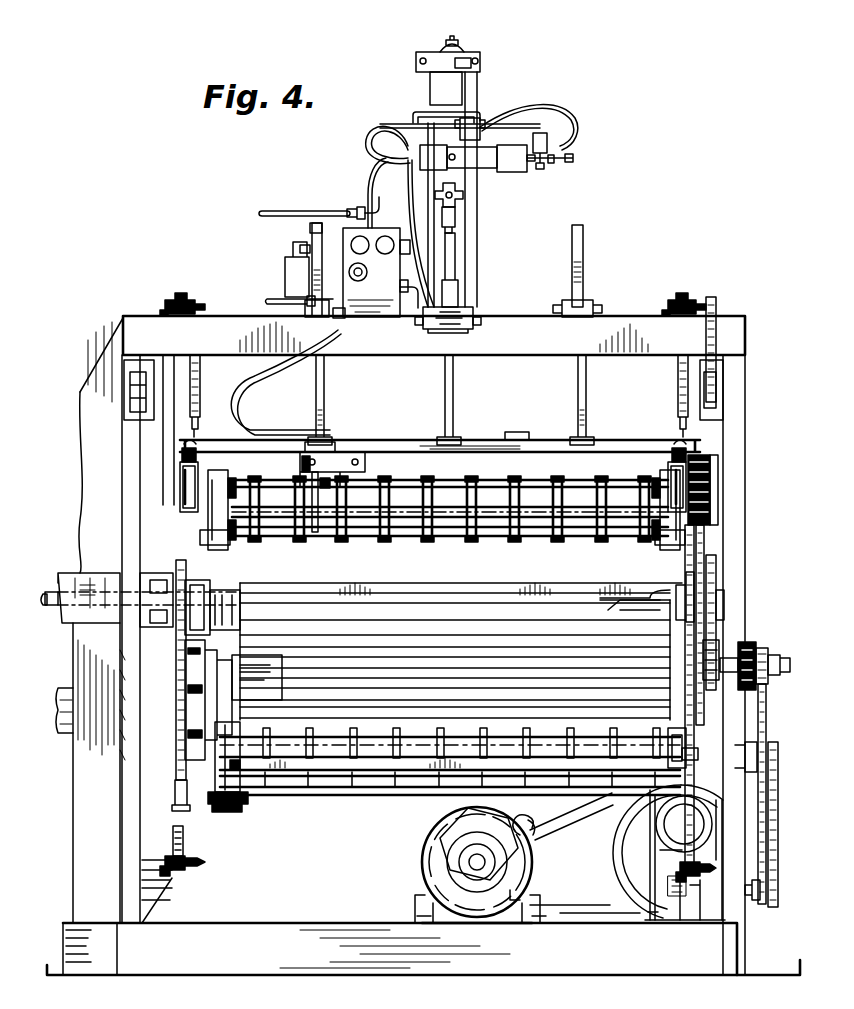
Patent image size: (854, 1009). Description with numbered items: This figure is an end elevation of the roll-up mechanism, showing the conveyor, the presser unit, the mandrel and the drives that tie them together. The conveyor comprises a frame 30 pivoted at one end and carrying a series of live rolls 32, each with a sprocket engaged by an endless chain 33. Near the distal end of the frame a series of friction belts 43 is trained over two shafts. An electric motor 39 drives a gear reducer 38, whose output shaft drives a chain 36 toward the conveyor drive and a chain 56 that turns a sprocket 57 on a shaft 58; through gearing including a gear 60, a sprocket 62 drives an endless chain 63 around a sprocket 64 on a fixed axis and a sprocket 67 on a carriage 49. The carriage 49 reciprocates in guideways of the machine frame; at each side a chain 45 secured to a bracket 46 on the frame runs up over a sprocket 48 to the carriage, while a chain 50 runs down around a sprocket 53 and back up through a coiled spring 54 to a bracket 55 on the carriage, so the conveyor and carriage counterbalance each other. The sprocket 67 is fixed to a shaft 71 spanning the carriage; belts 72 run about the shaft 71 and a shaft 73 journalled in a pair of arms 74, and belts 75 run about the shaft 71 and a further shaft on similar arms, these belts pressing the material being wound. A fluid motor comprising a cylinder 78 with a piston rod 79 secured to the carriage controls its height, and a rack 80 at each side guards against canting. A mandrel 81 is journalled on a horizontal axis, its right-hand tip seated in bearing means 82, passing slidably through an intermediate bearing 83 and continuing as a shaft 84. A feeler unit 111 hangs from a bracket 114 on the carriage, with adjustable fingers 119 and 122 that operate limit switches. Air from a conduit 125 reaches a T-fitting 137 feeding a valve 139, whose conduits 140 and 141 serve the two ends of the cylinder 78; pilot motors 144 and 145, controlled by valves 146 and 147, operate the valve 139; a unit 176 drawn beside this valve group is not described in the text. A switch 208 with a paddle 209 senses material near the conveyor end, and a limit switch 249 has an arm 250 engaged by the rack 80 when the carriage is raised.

The frame 30 is at (672, 610).
The live rolls 32 is at (500, 650).
The endless chain 33 is at (695, 738).
The chain 36 is at (770, 808).
The gear reducer 38 is at (660, 867).
The electric motor 39 is at (428, 851).
The friction belts 43 is at (370, 782).
The chain 45 is at (200, 378).
The bracket 46 is at (178, 720).
The sprocket 48 is at (185, 300).
The carriage 49 is at (490, 432).
The chain 50 is at (186, 832).
The sprocket 53 is at (178, 868).
The coiled spring 54 is at (180, 460).
The bracket 55 is at (185, 441).
The chain 56 is at (766, 712).
The sprocket 57 is at (770, 650).
The shaft 58 is at (782, 658).
The gear 60 is at (750, 648).
The sprocket 62 is at (716, 632).
The endless chain 63 is at (716, 572).
The sprocket 64 is at (716, 300).
The sprocket 67 is at (700, 488).
The shaft 71 is at (445, 490).
The belts 72 is at (460, 538).
The shaft 73 is at (410, 538).
The arms 74 is at (222, 528).
The belts 75 is at (480, 490).
The cylinder 78 is at (438, 92).
The rod 79 is at (452, 390).
The rack 80 is at (320, 266).
The mandrel 81 is at (512, 585).
The bearing means 82 is at (678, 588).
The intermediate bearing 83 is at (178, 575).
The shaft 84 is at (50, 608).
The feeler unit 111 is at (295, 466).
The bracket 114 is at (350, 445).
The finger 119 is at (328, 478).
The finger 122 is at (318, 470).
The conduit 125 is at (290, 210).
The T-fitting 137 is at (480, 125).
The valve 139 is at (476, 170).
The conduit 140 is at (479, 88).
The conduit 141 is at (456, 243).
The pilot motor 144 is at (432, 150).
The pilot motor 145 is at (514, 168).
The valve 146 is at (400, 140).
The valve 147 is at (552, 140).
The control box 176 is at (385, 238).
The switch 208 is at (186, 660).
The paddle 209 is at (280, 705).
The limit switch 249 is at (290, 250).
The arm 250 is at (310, 231).